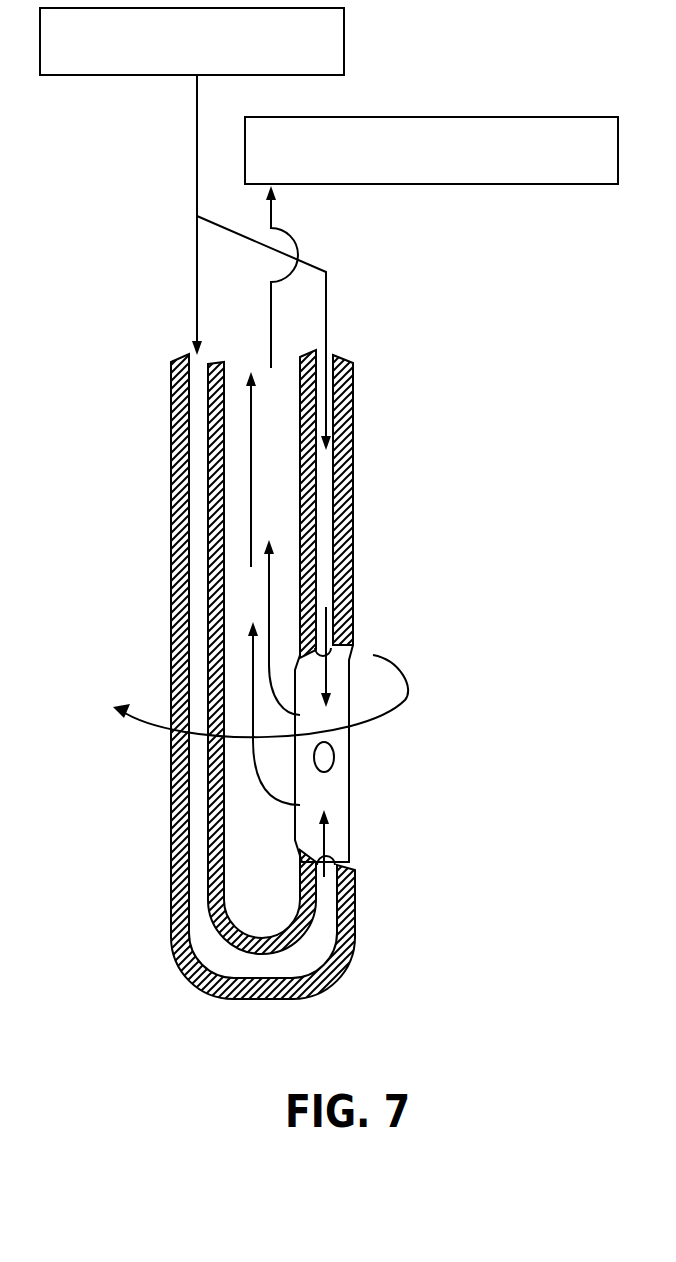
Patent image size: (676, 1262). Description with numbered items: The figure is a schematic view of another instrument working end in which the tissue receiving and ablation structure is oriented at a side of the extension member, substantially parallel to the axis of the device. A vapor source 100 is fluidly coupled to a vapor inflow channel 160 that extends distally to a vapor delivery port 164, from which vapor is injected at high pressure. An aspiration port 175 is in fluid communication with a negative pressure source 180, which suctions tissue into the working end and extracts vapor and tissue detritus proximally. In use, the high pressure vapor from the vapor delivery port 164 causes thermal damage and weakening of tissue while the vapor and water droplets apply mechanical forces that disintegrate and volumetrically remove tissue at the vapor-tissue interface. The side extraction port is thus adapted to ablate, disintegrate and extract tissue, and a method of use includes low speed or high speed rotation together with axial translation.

The vapor source 100 is at (199, 65).
The negative pressure source 180 is at (446, 177).
The vapor inflow channel 160 is at (190, 508).
The aspiration port 175 is at (255, 590).
The vapor delivery port 164 is at (335, 855).